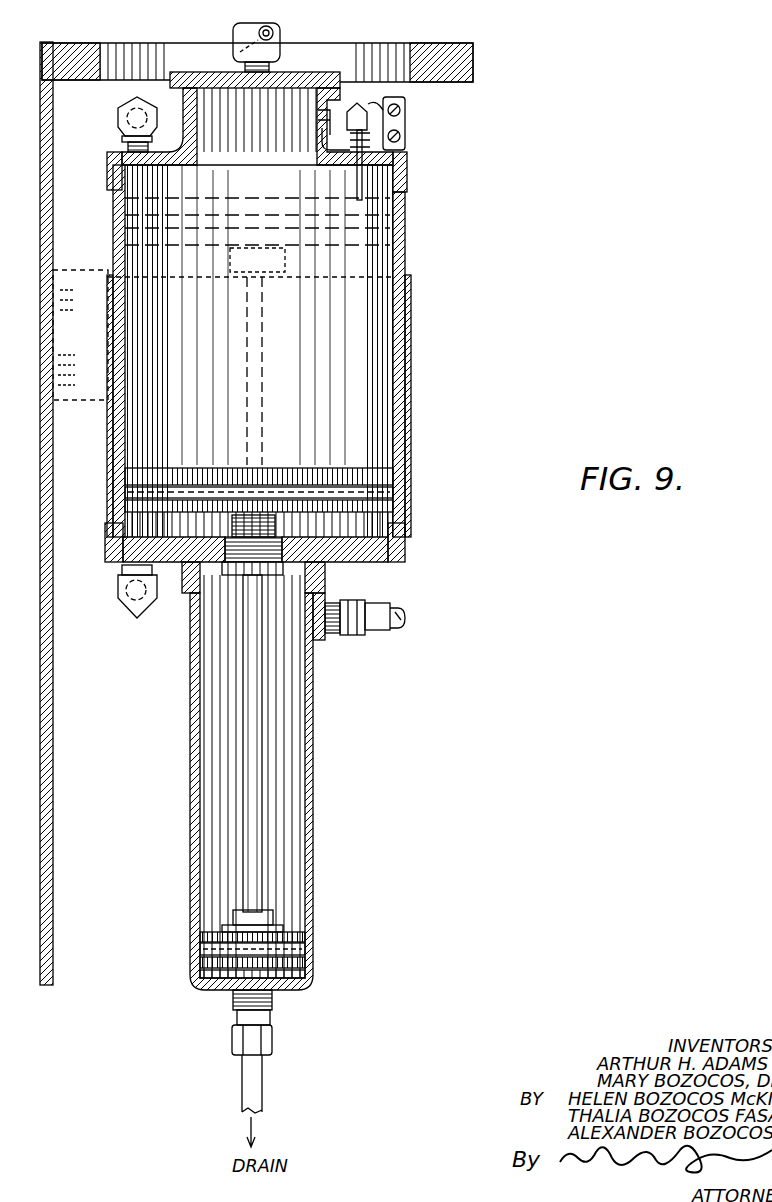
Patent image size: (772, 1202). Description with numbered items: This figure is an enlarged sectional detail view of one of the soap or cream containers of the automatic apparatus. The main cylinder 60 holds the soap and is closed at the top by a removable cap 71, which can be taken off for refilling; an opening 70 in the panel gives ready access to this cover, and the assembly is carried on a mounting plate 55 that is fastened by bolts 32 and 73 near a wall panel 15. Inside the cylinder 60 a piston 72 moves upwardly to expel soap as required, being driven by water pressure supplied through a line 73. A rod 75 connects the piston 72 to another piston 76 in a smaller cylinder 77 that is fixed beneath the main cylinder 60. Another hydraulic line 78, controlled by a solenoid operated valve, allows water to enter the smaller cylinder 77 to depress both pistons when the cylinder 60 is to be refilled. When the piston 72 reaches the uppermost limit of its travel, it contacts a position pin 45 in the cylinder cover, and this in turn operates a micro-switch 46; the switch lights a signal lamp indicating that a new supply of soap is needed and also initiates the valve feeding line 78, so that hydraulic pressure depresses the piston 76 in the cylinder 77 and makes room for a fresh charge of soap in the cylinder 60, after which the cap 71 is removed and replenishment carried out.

The wall panel 15 is at (46, 990).
The mounting bolt 32 is at (125, 122).
The position pin 45 is at (363, 186).
The micro-switch 46 is at (406, 125).
The mounting plate 55 is at (478, 73).
The cylinder 60 is at (403, 263).
The opening 70 is at (408, 44).
The removable cap 71 is at (207, 72).
The piston 72 is at (362, 475).
The line 73 is at (130, 588).
The rod 75 is at (262, 765).
The piston 76 is at (291, 928).
The smaller cylinder 77 is at (190, 804).
The hydraulic line 78 is at (405, 613).